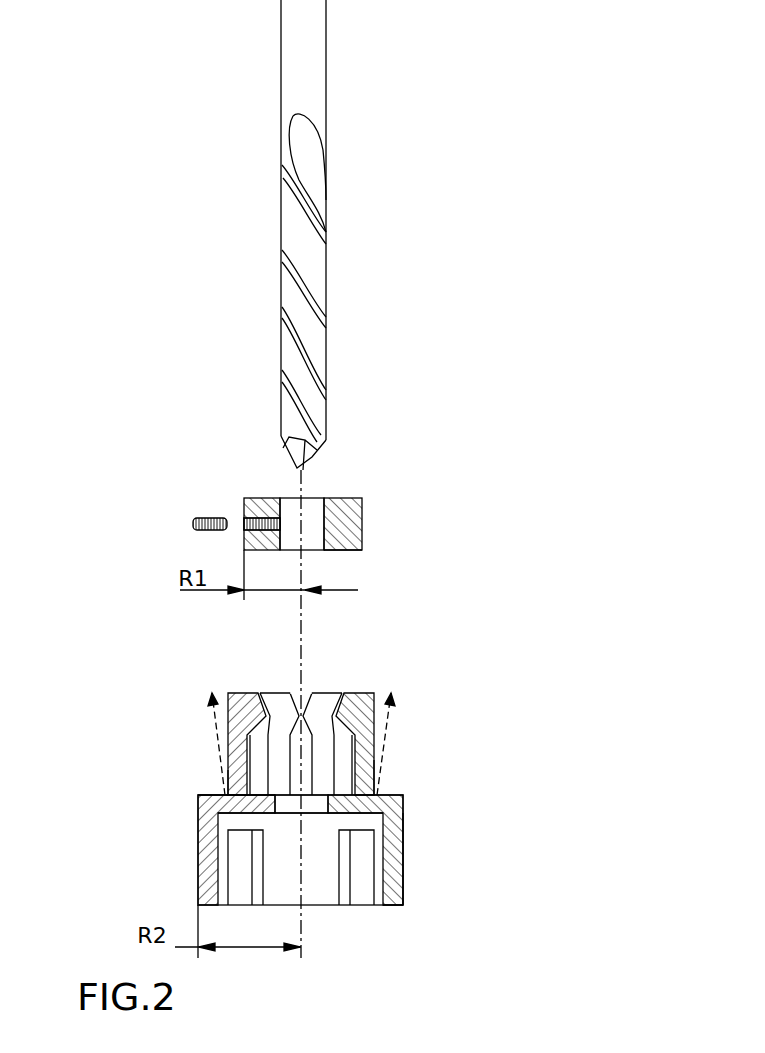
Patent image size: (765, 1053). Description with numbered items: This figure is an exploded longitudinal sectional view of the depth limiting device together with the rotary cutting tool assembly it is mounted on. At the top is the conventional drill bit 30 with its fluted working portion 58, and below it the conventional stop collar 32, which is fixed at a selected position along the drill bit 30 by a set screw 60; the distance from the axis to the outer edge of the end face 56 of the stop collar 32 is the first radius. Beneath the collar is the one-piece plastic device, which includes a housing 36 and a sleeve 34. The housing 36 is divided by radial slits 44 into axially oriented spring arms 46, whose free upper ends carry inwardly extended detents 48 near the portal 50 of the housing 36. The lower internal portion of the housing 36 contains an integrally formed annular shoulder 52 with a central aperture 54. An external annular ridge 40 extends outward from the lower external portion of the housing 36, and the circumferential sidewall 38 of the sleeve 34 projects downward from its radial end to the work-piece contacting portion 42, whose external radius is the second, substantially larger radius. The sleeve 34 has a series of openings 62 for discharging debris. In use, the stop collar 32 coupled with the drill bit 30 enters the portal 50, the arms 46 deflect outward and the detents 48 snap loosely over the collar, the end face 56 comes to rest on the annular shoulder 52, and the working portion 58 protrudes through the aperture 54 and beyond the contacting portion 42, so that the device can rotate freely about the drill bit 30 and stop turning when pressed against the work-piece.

The drill bit 30 is at (328, 50).
The working portion 58 is at (280, 345).
The set screw 60 is at (192, 522).
The stop collar 32 is at (362, 522).
The end face 56 is at (340, 550).
The portal 50 is at (305, 690).
The slits 44 is at (345, 696).
The detents 48 is at (262, 722).
The annular shoulder 52 is at (243, 790).
The external annular ridge 40 is at (228, 796).
The sleeve 34 is at (198, 823).
The openings 62 is at (237, 878).
The circumferential sidewall 38 is at (403, 865).
The work-piece contacting portion 42 is at (397, 905).
The housing 36 is at (377, 783).
The spring arms 46 is at (380, 735).
The central aperture 54 is at (275, 808).